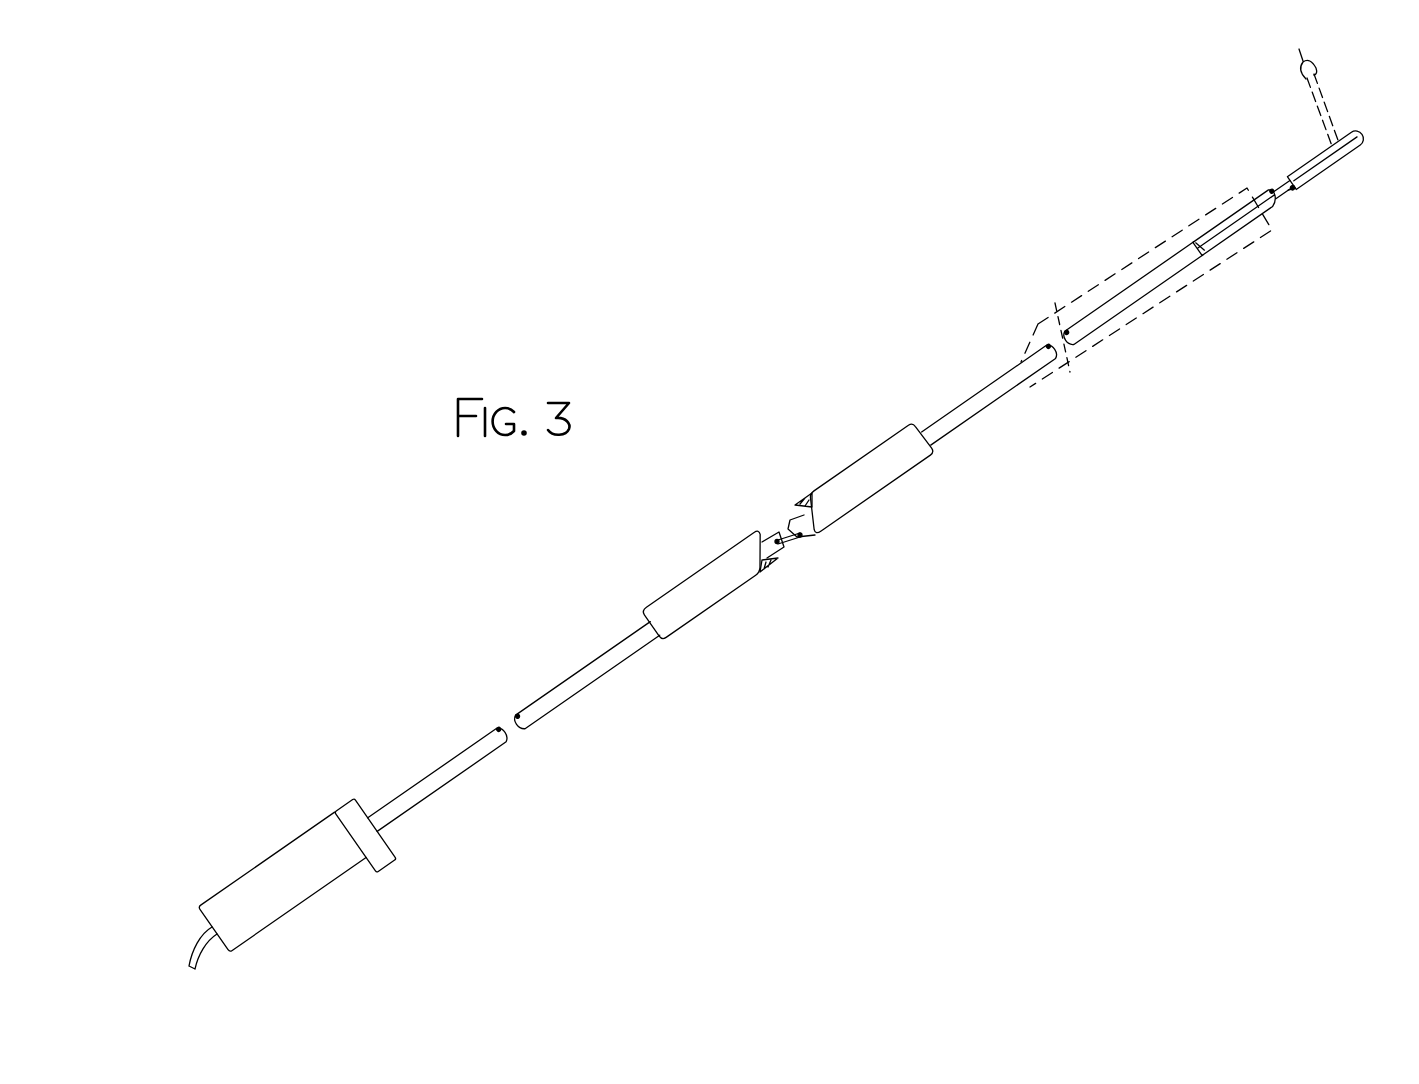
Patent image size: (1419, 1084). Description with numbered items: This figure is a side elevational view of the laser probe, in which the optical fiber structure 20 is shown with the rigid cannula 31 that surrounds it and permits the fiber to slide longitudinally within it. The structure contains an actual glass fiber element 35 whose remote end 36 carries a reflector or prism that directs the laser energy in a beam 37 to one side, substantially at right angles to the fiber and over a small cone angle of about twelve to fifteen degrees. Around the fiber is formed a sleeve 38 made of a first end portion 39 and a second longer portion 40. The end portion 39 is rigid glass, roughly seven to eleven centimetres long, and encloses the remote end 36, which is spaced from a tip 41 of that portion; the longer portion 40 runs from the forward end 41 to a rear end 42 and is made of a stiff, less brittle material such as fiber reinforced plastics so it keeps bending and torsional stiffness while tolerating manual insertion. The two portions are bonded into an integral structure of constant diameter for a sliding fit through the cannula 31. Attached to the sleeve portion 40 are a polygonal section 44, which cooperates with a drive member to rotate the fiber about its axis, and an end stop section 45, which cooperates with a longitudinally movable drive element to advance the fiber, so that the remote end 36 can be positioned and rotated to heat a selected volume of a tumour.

The optical fiber structure 20 is at (957, 349).
The rigid cannula 31 is at (1097, 300).
The glass fiber element 35 is at (1281, 187).
The remote end 36 is at (1347, 150).
The beam 37 is at (1297, 78).
The sleeve 38 is at (1007, 397).
The first end portion 39 is at (1295, 190).
The second longer portion 40 is at (937, 440).
The tip 41 is at (1197, 247).
The rear end 42 is at (221, 938).
The polygonal section 44 is at (710, 570).
The end stop section 45 is at (301, 838).